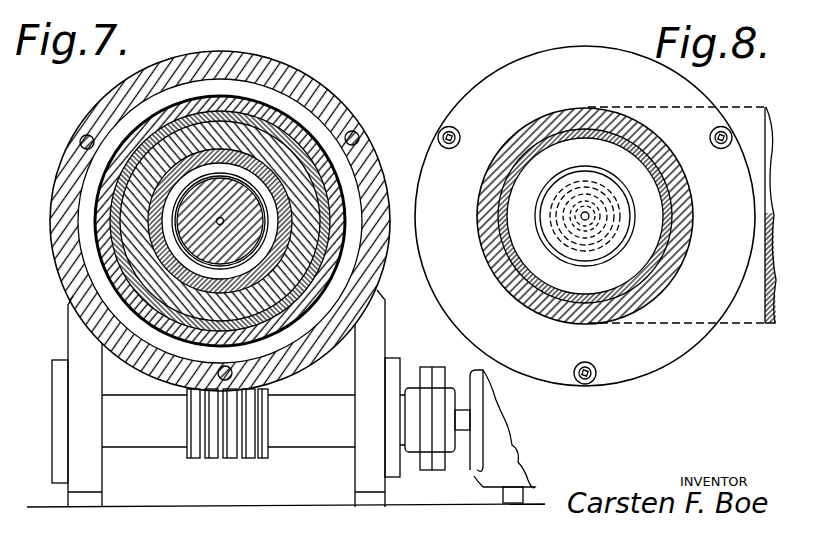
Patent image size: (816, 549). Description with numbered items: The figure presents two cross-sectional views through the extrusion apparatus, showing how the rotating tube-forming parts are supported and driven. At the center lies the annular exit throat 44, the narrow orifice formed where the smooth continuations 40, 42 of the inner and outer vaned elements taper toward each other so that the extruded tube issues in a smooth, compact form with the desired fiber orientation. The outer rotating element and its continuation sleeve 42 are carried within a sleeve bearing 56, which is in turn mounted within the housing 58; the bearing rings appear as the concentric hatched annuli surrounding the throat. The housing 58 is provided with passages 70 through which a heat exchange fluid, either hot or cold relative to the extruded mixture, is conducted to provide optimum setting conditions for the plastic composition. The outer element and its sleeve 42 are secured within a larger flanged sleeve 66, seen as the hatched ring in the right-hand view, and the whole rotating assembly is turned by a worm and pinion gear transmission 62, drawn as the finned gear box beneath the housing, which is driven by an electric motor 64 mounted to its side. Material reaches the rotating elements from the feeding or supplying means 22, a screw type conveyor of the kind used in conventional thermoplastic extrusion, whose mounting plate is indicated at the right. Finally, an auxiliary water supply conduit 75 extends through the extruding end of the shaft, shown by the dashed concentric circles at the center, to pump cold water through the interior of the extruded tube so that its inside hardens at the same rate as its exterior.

In FIG. 8, the feeding or supplying means 22 is at (745, 310).
In FIG. 7, the smooth continuation of inner element 40 is at (240, 177).
In FIG. 8, the smooth continuation of inner element 40 is at (616, 193).
In FIG. 7, the smooth continuation of outer rotating element 42 is at (294, 216).
In FIG. 8, the smooth continuation of outer rotating element 42 is at (599, 166).
In FIG. 8, the annular exit throat 44 is at (550, 185).
In FIG. 7, the sleeve bearing 56 is at (302, 132).
In FIG. 7, the housing 58 is at (86, 134).
In FIG. 7, the worm and pinion gear transmission 62 is at (246, 464).
In FIG. 7, the electric motor 64 is at (495, 467).
In FIG. 7, the flanged sleeve 66 is at (230, 137).
In FIG. 8, the flanged sleeve 66 is at (581, 108).
In FIG. 7, the passages 70 is at (95, 180).
In FIG. 8, the auxiliary water supply conduit 75 is at (587, 218).